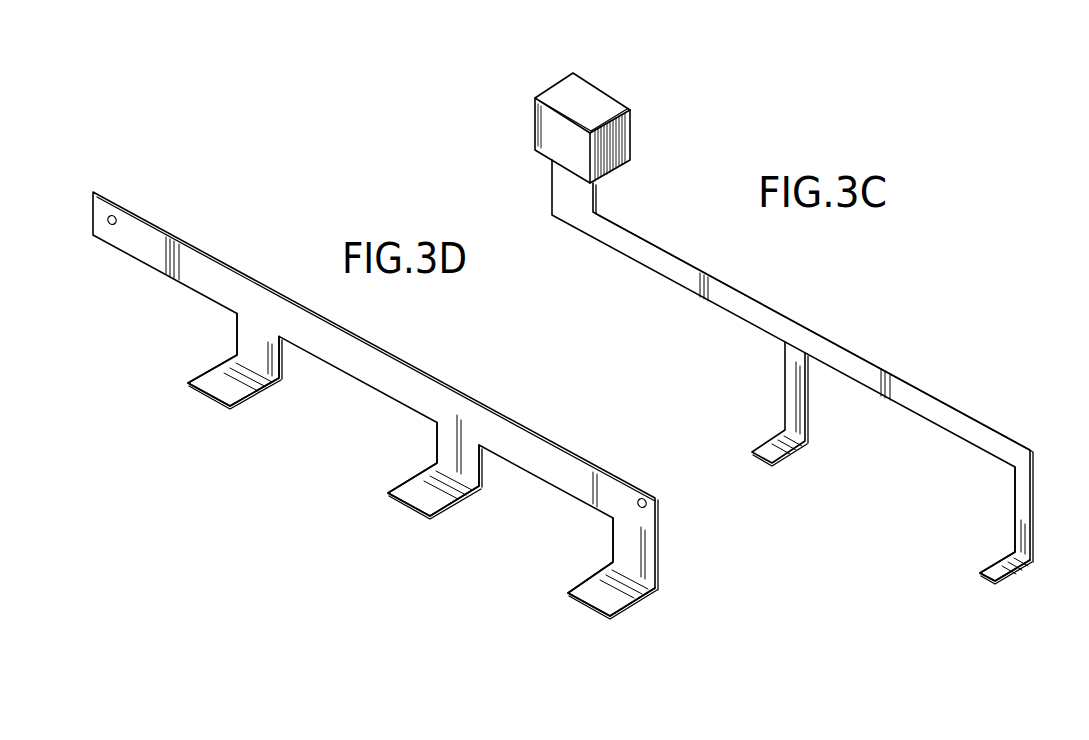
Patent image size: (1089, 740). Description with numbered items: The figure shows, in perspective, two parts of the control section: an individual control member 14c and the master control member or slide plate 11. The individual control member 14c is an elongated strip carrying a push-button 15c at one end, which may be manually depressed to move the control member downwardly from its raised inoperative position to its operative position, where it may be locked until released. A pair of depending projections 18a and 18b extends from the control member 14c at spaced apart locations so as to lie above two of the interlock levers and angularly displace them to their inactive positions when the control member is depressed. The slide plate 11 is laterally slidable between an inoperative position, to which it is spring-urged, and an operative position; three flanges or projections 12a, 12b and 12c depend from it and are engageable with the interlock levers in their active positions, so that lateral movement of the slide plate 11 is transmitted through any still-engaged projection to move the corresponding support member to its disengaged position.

In FIG. 3D, the master control member or slide plate 11 is at (357, 342).
In FIG. 3D, the projection 12a is at (225, 397).
In FIG. 3D, the projection 12b is at (407, 493).
In FIG. 3D, the projection 12c is at (598, 595).
In FIG. 3C, the individual control member 14c is at (757, 310).
In FIG. 3C, the push-button 15c is at (582, 88).
In FIG. 3C, the depending projection 18a is at (777, 453).
In FIG. 3C, the depending projection 18b is at (993, 577).